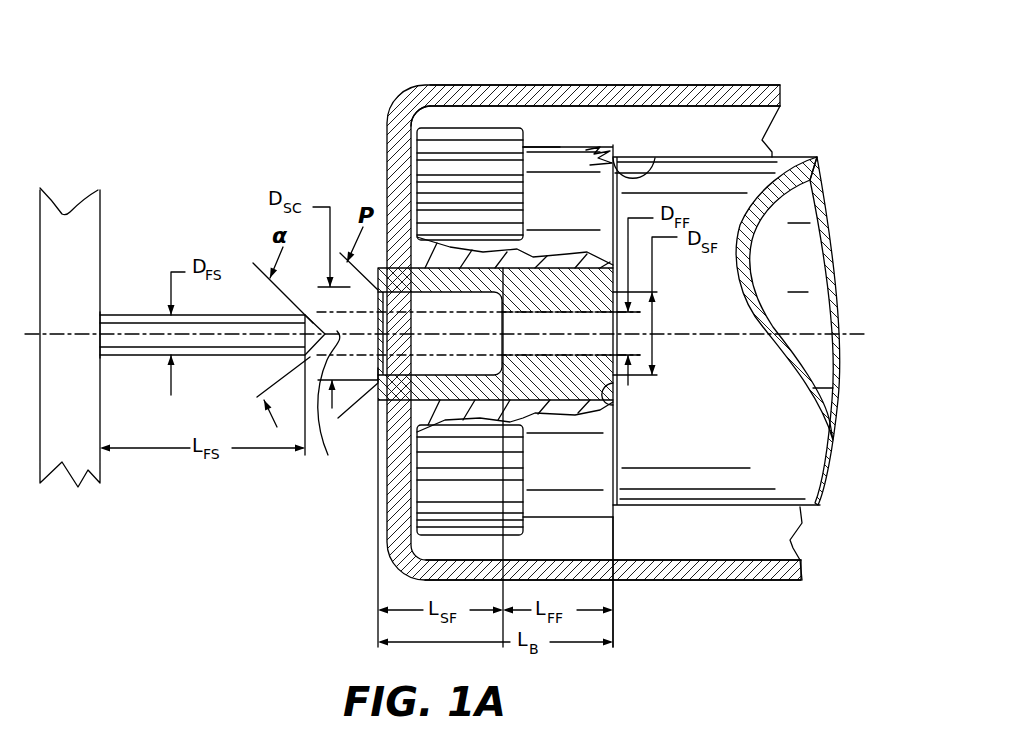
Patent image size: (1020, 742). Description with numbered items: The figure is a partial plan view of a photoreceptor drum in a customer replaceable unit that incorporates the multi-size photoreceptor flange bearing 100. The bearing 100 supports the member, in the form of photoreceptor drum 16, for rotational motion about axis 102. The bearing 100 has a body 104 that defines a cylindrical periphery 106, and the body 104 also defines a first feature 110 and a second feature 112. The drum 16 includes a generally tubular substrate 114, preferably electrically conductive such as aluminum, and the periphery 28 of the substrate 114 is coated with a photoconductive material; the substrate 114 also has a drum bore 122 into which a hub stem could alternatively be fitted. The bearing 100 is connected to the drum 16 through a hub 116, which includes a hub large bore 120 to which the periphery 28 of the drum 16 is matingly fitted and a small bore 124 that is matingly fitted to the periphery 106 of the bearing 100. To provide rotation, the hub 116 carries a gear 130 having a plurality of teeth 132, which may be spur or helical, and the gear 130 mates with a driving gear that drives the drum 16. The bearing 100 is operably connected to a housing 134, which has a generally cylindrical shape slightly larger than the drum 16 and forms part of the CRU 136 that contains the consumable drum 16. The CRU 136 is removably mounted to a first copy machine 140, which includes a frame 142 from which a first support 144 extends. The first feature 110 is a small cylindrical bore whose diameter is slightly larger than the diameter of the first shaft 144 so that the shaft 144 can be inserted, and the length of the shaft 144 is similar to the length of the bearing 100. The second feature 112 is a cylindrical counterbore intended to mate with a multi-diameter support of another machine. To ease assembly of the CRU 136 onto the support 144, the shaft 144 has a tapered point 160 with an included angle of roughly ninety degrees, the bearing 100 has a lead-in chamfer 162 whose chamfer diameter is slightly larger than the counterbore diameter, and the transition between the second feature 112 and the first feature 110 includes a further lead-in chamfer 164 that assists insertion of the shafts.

The photoreceptor drum 16 is at (795, 133).
The periphery 28 is at (603, 150).
The multi-size photoreceptor flange bearing 100 is at (378, 293).
The axis 102 is at (88, 327).
The body 104 is at (377, 405).
The cylindrical periphery 106 is at (587, 250).
The first feature 110 is at (537, 267).
The second feature 112 is at (418, 293).
The substrate 114 is at (813, 175).
The hub 116 is at (583, 122).
The hub large bore 120 is at (640, 183).
The drum bore 122 is at (748, 265).
The small bore 124 is at (617, 392).
The gear 130 is at (423, 122).
The teeth 132 is at (467, 142).
The housing 134 is at (790, 572).
The CRU 136 is at (728, 618).
The first copy machine 140 is at (88, 510).
The frame 142 is at (63, 212).
The first support 144 is at (227, 348).
The tapered point 160 is at (331, 406).
The lead-in chamfer 162 is at (378, 375).
The lead-in chamfer 164 is at (500, 313).